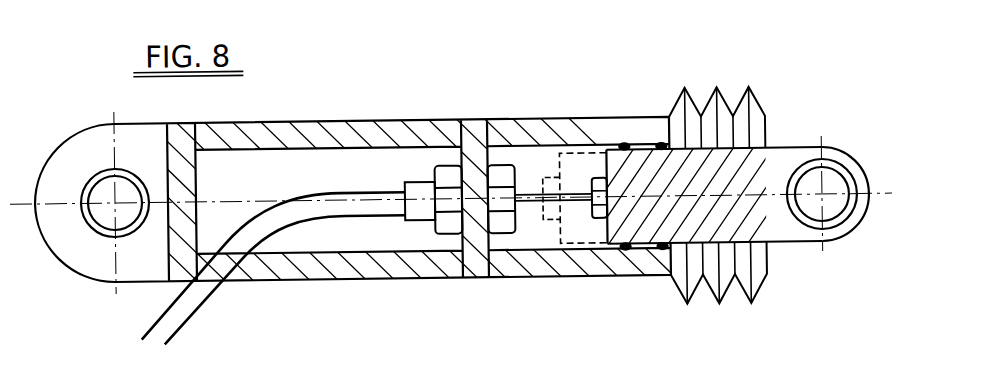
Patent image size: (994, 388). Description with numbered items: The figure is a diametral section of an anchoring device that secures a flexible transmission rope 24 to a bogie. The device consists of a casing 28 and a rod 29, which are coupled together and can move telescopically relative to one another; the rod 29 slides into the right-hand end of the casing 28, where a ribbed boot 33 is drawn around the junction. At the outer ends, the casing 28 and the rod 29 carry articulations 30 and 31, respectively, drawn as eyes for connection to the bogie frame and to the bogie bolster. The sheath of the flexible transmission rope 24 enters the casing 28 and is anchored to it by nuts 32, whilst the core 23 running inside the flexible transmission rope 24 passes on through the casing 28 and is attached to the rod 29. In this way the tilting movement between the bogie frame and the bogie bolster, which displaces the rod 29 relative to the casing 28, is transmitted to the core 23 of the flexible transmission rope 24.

The casing 28 is at (350, 128).
The articulation 30 is at (108, 218).
The flexible transmission rope 24 is at (190, 311).
The nuts 32 is at (502, 233).
The core 23 is at (525, 205).
The rod 29 is at (743, 228).
The articulation 31 is at (832, 194).
The bellows 33 is at (715, 278).